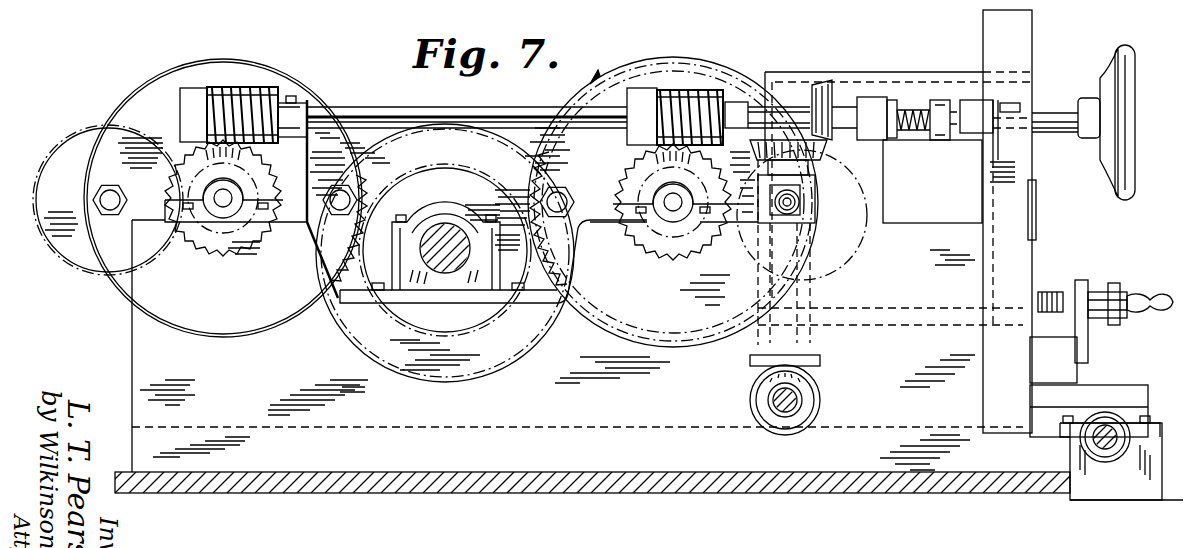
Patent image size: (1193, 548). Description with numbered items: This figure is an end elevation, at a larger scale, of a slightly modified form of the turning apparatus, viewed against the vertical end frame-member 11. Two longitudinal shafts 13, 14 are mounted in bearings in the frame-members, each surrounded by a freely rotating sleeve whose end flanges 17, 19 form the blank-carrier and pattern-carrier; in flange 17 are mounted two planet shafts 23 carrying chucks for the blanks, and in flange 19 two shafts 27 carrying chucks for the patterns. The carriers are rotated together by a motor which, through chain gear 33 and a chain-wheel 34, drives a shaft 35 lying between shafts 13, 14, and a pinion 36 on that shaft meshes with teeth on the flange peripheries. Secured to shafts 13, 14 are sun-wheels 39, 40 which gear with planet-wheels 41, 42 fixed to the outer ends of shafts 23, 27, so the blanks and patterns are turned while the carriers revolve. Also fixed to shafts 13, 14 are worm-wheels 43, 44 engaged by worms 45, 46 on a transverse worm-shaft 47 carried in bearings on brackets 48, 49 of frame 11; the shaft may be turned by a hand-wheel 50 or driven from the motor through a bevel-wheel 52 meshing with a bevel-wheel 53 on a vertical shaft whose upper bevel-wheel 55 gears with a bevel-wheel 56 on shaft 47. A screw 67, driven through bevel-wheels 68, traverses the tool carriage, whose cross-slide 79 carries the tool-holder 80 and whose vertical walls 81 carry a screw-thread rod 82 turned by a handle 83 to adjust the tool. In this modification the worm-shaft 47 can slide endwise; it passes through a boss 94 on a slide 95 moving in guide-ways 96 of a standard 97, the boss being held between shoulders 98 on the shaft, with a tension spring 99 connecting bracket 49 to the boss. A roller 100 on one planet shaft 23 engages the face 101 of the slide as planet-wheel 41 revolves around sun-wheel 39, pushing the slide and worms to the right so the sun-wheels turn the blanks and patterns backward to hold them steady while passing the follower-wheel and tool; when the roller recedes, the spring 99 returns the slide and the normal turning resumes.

The end frame-member 11 is at (132, 332).
The shaft 13 is at (673, 212).
The shaft 14 is at (220, 198).
The flange 17 is at (622, 332).
The flange 19 is at (216, 336).
The shaft 23 is at (556, 200).
The shaft 27 is at (104, 198).
The chain gear 33 is at (760, 398).
The chain-wheel 34 is at (507, 370).
The shaft 35 is at (446, 276).
The pinion 36 is at (382, 316).
The sun-wheel 39 is at (628, 257).
The sun-wheel 40 is at (204, 240).
The planet-wheel 41 is at (480, 188).
The planet-wheel 42 is at (56, 252).
The worm-wheel 43 is at (693, 238).
The worm-wheel 44 is at (268, 232).
The worm 45 is at (698, 92).
The worm 46 is at (232, 93).
The worm-shaft 47 is at (543, 118).
The bracket 48 is at (298, 108).
The bracket 49 is at (876, 113).
The hand-wheel 50 is at (1110, 70).
The bevel-wheel 52 is at (783, 418).
The bevel-wheel 53 is at (812, 362).
The bevel-wheel 55 is at (806, 186).
The bevel-wheel 56 is at (826, 98).
The screw 67 is at (1108, 432).
The bevel-wheel 68 is at (797, 418).
The cross-slide 79 is at (1032, 290).
The tool-holder 80 is at (1036, 212).
The vertical wall 81 is at (1080, 358).
The screw-thread rod 82 is at (1052, 292).
The handle 83 is at (1141, 294).
The boss 94 is at (976, 106).
The slide 95 is at (904, 130).
The guide-way 96 is at (914, 83).
The standard 97 is at (840, 70).
The shoulder 98 is at (946, 132).
The tension spring 99 is at (960, 130).
The roller 100 is at (753, 93).
The face 101 is at (798, 90).